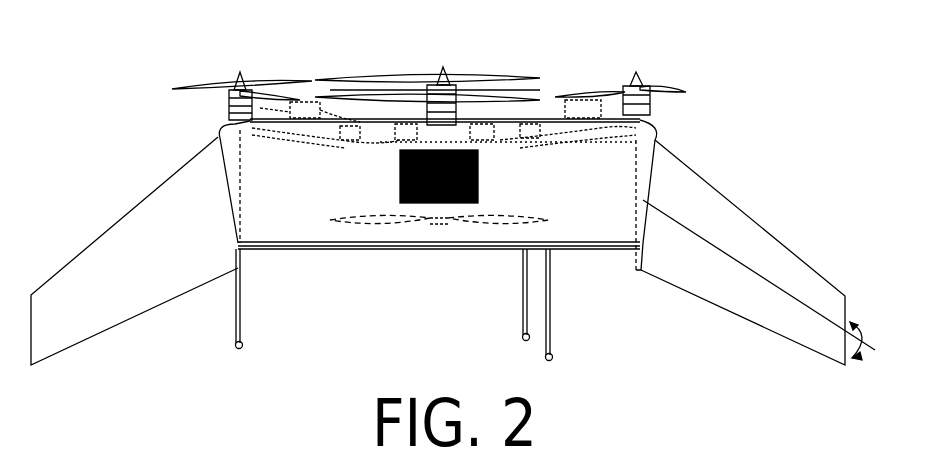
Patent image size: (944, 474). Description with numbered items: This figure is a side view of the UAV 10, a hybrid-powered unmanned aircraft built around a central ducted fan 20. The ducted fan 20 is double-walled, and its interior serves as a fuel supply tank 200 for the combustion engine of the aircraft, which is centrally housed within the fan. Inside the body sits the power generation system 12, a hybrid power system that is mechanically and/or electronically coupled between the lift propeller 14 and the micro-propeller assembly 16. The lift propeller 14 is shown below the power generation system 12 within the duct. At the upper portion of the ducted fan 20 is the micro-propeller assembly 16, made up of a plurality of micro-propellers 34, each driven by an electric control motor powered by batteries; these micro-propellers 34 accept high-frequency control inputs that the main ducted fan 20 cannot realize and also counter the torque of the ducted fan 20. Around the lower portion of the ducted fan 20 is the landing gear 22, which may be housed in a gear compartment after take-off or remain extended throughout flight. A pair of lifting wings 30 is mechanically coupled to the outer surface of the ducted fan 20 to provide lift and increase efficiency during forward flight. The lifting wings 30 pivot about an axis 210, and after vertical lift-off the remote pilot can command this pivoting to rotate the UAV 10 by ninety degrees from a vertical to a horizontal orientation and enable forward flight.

The UAV 10 is at (487, 30).
The power generation system 12 is at (396, 192).
The lift propeller 14 is at (484, 235).
The micro-propeller assembly 16 is at (162, 55).
The ducted fan 20 is at (655, 133).
The landing gear 22 is at (236, 325).
The lifting wings 30 is at (104, 226).
The micro-propellers 34 is at (284, 80).
The fuel supply tank 200 is at (605, 217).
The axis 210 is at (855, 320).